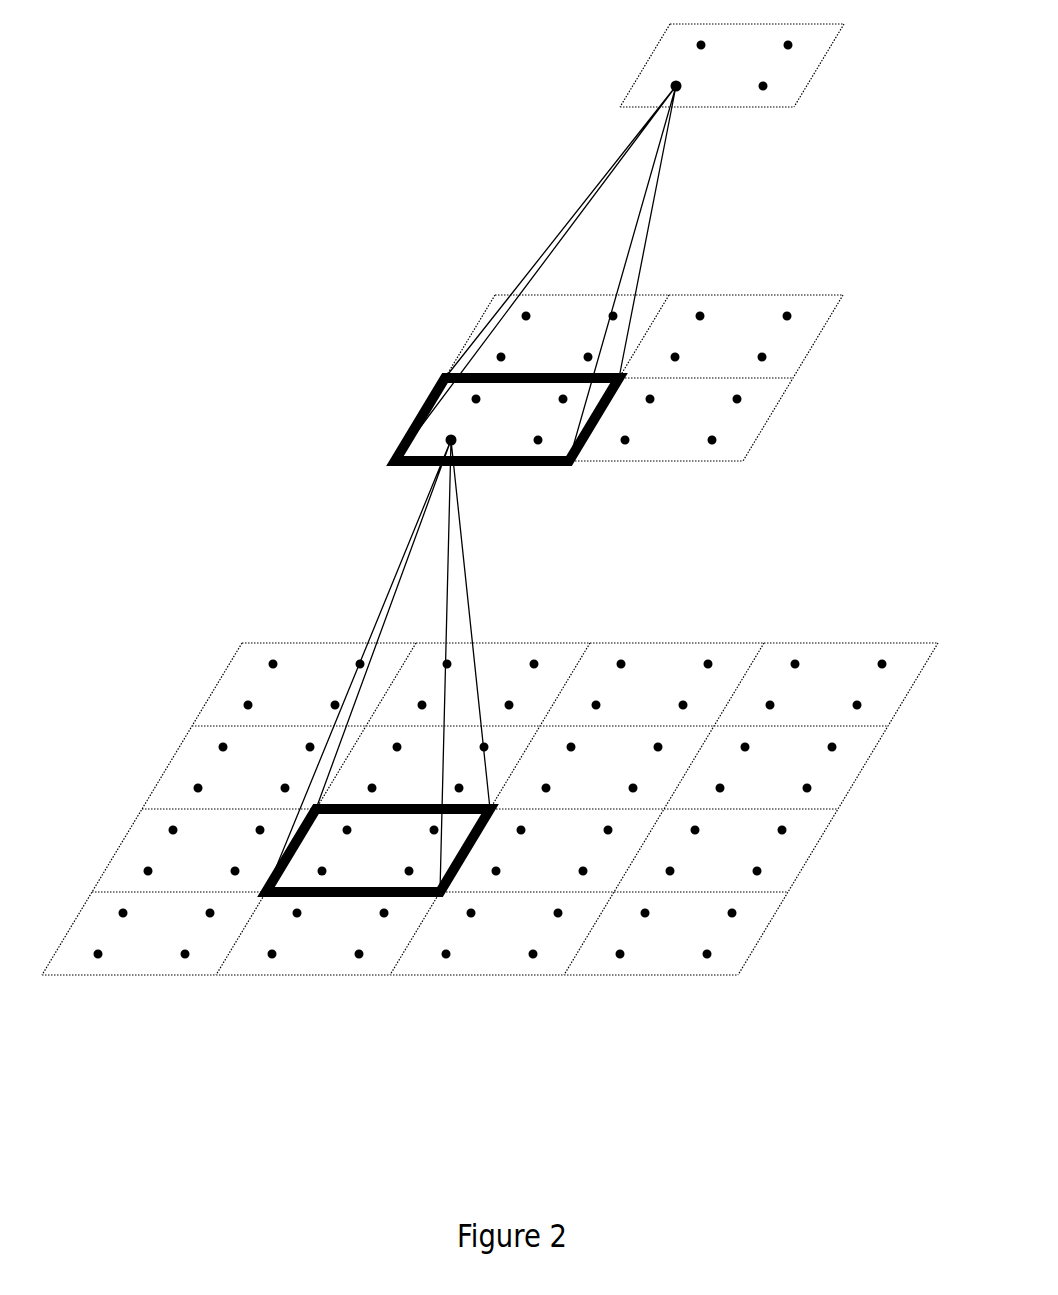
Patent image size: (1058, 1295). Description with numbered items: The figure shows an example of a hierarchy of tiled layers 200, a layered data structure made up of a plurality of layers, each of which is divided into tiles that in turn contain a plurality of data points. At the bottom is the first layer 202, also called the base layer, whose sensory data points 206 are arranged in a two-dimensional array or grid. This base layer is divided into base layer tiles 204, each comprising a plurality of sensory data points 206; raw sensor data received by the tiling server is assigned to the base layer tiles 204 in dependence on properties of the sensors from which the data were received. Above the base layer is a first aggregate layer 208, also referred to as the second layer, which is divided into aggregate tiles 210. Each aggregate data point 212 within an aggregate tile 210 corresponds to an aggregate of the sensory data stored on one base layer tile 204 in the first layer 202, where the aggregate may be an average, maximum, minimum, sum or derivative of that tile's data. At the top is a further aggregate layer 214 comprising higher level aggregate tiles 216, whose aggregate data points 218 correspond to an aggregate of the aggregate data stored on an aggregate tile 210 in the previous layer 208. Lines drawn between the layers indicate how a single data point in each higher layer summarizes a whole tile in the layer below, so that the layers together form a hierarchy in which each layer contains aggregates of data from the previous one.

The hierarchy of tiled layers 200 is at (158, 60).
The first layer 202 is at (131, 760).
The base layer tile 204 is at (362, 896).
The sensory data point 206 is at (325, 872).
The first aggregate layer 208 is at (829, 384).
The aggregate tile 210 is at (412, 425).
The aggregate data point 212 is at (448, 442).
The further aggregate layer 214 is at (588, 70).
The higher level aggregate tile 216 is at (833, 37).
The aggregate data point 218 is at (680, 88).